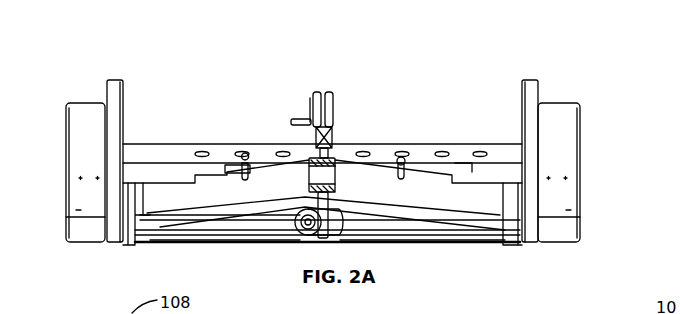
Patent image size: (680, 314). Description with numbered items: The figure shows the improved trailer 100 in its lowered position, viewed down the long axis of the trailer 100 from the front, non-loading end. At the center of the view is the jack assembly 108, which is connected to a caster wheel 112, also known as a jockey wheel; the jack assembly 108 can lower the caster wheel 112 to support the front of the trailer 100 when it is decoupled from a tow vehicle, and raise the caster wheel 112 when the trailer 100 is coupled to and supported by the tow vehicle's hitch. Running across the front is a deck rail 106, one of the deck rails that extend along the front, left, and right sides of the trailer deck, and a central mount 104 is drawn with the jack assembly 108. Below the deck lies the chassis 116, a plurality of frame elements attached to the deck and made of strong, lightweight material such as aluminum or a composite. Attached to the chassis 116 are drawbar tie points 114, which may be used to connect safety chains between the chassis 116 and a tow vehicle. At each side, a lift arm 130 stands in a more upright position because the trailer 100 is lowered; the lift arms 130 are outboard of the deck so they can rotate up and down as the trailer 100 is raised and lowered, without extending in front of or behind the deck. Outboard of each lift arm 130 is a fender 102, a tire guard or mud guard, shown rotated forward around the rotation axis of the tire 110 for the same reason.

The trailer 100 is at (304, 36).
The fender 102 is at (92, 102).
The central mount block 104 is at (340, 160).
The deck rails 106 is at (183, 143).
The jack assembly 108 is at (326, 90).
The tire 110 is at (70, 230).
The caster wheel 112 is at (314, 236).
The drawbar tie points 114 is at (403, 157).
The chassis 116 is at (217, 192).
The lift arms 130 is at (116, 95).